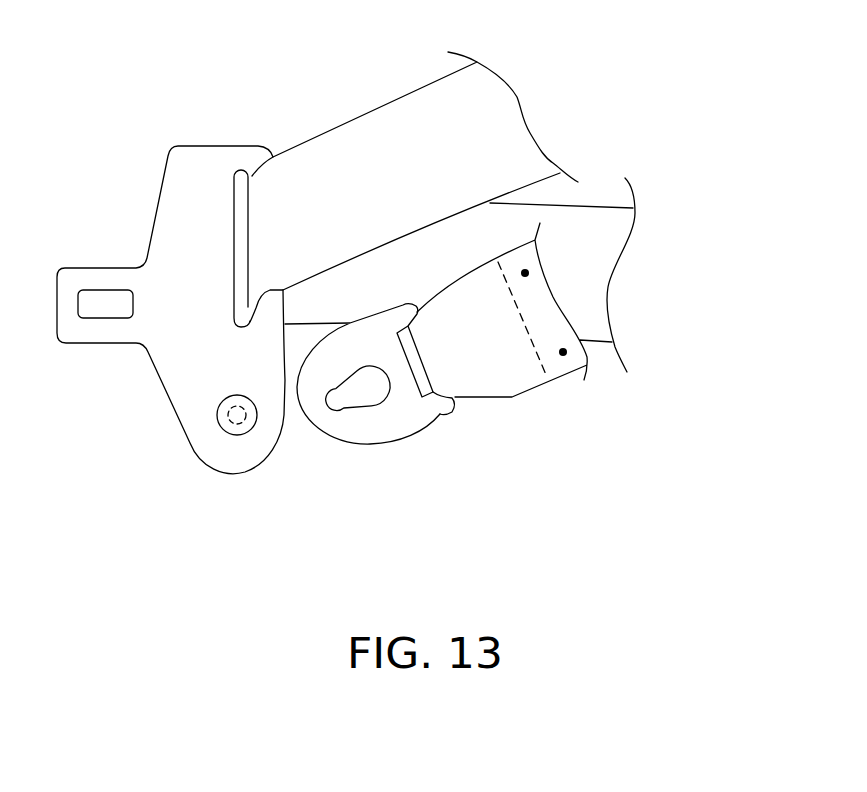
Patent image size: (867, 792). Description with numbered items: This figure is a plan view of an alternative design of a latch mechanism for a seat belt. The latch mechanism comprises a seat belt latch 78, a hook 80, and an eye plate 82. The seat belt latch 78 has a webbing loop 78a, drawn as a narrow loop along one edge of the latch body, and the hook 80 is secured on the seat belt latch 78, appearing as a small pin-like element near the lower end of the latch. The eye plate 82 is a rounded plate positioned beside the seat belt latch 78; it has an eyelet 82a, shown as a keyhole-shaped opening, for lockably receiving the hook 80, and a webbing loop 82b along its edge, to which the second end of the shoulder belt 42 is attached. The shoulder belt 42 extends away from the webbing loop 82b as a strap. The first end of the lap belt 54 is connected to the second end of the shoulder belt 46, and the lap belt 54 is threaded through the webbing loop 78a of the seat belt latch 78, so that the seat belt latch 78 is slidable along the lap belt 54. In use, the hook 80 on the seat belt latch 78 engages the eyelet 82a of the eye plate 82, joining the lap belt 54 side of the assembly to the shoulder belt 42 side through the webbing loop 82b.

The shoulder belt 42 is at (523, 377).
The shoulder belt 46 is at (497, 128).
The lap belt 54 is at (583, 260).
The seat belt latch 78 is at (163, 262).
The webbing loop 78a is at (260, 157).
The hook 80 is at (236, 424).
The eye plate 82 is at (402, 417).
The eyelet 82a is at (347, 400).
The webbing loop 82b is at (447, 415).